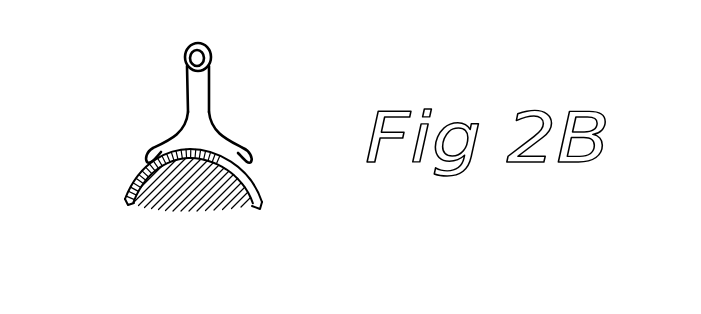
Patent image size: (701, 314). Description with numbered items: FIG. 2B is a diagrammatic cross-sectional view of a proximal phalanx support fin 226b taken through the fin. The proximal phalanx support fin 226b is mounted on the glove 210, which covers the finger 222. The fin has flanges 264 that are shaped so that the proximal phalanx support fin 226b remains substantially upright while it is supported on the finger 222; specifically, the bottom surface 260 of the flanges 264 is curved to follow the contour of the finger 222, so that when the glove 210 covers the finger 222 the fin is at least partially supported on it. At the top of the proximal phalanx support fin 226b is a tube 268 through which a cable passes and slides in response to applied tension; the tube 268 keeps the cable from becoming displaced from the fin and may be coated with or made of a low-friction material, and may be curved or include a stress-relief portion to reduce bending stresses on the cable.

The proximal phalanx support fin 226b is at (253, 79).
The tube 268 is at (190, 46).
The bottom surface 260 is at (196, 152).
The flanges 264 is at (158, 146).
The glove 210 is at (262, 197).
The finger 222 is at (217, 197).